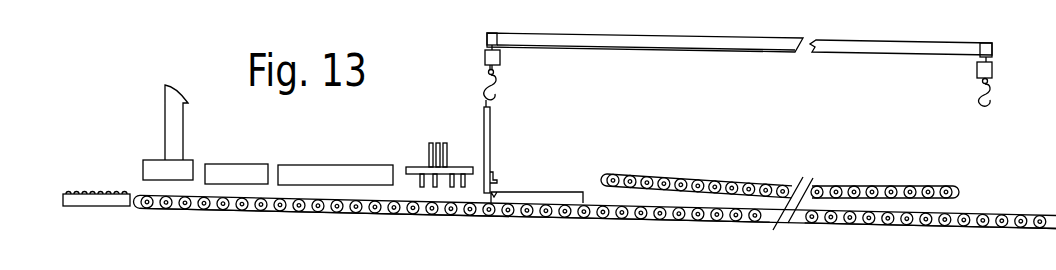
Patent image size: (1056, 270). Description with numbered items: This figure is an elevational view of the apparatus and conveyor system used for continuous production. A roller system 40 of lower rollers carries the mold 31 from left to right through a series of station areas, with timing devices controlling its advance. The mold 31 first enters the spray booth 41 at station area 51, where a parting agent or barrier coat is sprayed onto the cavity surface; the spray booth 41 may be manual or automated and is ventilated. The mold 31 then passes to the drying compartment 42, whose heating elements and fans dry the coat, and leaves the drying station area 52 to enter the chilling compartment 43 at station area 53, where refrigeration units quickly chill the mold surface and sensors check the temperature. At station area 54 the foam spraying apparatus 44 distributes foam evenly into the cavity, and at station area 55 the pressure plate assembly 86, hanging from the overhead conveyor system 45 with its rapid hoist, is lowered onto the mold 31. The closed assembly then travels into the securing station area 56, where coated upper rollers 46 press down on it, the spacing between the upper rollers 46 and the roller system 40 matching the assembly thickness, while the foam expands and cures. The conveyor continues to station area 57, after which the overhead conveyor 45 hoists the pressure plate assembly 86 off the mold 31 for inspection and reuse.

The mold 31 is at (530, 197).
The roller system 40 is at (1030, 199).
The spray booth 41 is at (155, 172).
The drying compartment 42 is at (238, 167).
The chilling compartment 43 is at (322, 176).
The foam spraying apparatus 44 is at (418, 166).
The overhead conveyor system 45 is at (658, 45).
The upper rollers 46 is at (675, 176).
The station area 51 is at (170, 223).
The drying station area 52 is at (240, 224).
The station area 53 is at (340, 225).
The station area 54 is at (447, 227).
The station area 55 is at (547, 230).
The securing station area 56 is at (795, 235).
The conveyor section 57 is at (1023, 240).
The pressure plate assembly 86 is at (490, 122).